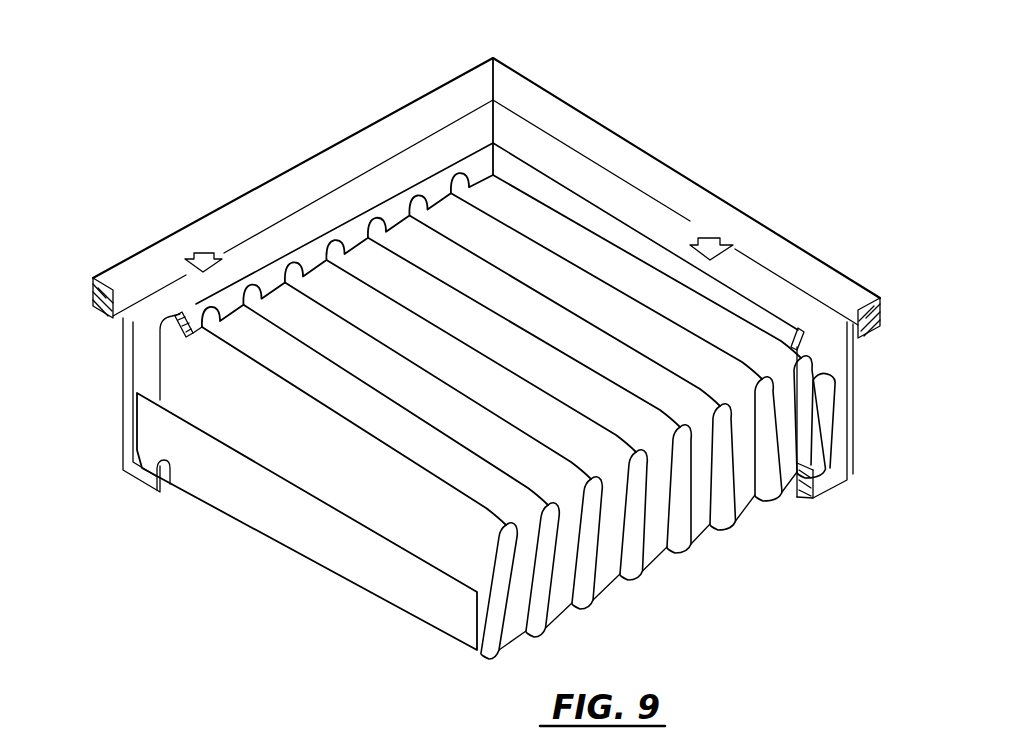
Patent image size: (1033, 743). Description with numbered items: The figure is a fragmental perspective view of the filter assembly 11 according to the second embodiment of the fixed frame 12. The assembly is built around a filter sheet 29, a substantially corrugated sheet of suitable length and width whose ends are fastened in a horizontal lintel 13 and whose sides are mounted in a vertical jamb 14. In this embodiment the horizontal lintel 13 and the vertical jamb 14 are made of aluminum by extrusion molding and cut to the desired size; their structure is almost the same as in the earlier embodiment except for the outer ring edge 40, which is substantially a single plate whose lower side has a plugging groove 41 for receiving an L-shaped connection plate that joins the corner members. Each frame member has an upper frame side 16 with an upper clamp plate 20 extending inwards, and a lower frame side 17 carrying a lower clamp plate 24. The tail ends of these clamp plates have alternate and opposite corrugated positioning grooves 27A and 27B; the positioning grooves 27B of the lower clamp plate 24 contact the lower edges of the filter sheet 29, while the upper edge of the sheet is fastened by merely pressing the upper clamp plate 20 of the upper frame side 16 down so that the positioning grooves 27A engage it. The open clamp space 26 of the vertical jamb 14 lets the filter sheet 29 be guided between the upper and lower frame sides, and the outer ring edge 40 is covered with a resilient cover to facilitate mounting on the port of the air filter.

The filter assembly 11 is at (619, 61).
The fixed frame 12 is at (470, 112).
The horizontal lintel 13 is at (238, 222).
The vertical jamb 14 is at (667, 192).
The upper frame side 16 is at (360, 150).
The lower frame side 17 is at (108, 420).
The upper clamp plate 20 is at (275, 282).
The lower clamp plate 24 is at (173, 462).
The open clamp space 26 is at (173, 377).
The corrugated positioning grooves of the upper clamp plate 27A is at (343, 250).
The corrugated positioning grooves of the lower clamp plate 27B is at (188, 462).
The filter sheet 29 is at (398, 574).
The outer ring edge 40 is at (134, 270).
The plugging groove 41 is at (96, 320).